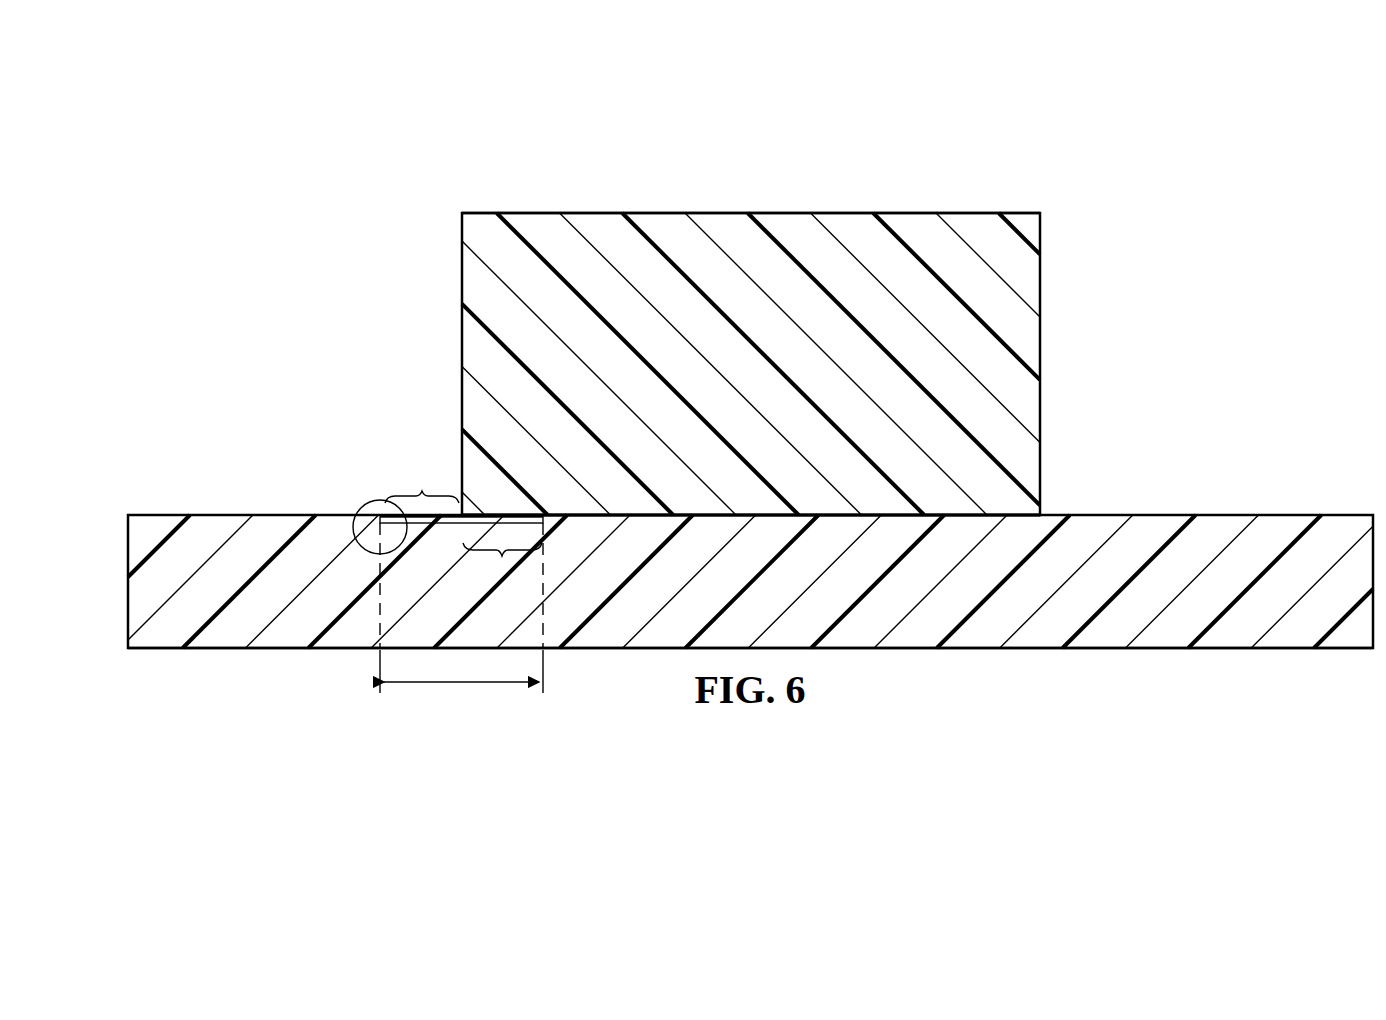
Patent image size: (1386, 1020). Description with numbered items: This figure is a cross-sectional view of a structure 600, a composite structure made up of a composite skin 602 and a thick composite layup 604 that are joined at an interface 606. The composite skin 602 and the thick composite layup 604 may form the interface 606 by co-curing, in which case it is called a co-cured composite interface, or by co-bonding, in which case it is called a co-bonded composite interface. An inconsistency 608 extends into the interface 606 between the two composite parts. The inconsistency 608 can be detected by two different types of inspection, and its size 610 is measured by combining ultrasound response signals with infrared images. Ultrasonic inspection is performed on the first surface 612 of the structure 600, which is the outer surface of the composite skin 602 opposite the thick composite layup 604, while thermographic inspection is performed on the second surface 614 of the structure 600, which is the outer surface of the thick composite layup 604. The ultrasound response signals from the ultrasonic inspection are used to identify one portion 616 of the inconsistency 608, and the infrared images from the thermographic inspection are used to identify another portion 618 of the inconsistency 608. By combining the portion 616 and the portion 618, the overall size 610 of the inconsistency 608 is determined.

The structure 600 is at (378, 81).
The composite skin 602 is at (215, 530).
The thick composite layup 604 is at (722, 230).
The interface 606 is at (807, 508).
The inconsistency 608 is at (354, 520).
The size 610 is at (462, 686).
The first surface 612 is at (907, 650).
The second surface 614 is at (907, 213).
The portion 616 is at (502, 565).
The portion 618 is at (461, 491).